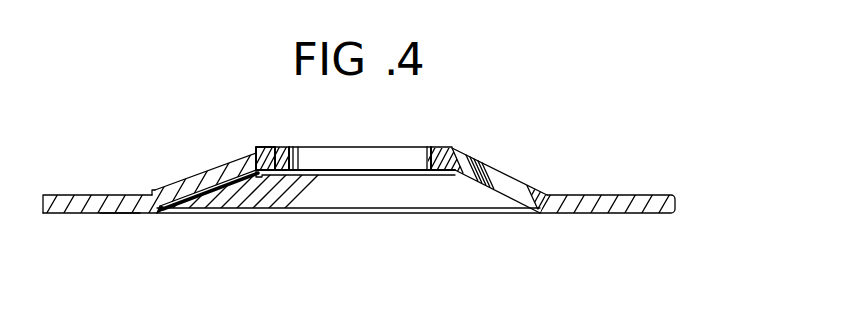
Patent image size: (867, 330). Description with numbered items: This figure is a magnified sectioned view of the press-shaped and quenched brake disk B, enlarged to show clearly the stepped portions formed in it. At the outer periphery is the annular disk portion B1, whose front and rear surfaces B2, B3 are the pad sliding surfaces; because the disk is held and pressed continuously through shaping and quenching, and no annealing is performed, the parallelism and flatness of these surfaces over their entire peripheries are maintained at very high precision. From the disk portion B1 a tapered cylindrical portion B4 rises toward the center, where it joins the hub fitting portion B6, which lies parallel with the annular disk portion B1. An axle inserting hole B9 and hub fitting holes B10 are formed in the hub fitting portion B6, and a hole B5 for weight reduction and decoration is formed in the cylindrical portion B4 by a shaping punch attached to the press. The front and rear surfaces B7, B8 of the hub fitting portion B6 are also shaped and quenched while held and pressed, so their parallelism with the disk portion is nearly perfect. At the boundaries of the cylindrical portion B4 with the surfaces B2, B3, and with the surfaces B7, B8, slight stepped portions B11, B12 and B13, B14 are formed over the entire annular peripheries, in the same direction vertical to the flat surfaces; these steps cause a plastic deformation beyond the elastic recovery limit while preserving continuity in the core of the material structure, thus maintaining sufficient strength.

The brake disk B is at (585, 195).
The annular disk portion B1 is at (70, 213).
The front surface B2 is at (92, 192).
The rear surface B3 is at (122, 213).
The tapered cylindrical portion B4 is at (203, 182).
The hole B5 is at (493, 177).
The hub fitting portion B6 is at (450, 173).
The front surface B7 is at (443, 147).
The rear surface B8 is at (453, 173).
The axle inserting hole B9 is at (412, 148).
The hub fitting hole B10 is at (275, 155).
The stepped portion B11 is at (148, 190).
The stepped portion B12 is at (163, 213).
The stepped portion B13 is at (257, 150).
The stepped portion B14 is at (260, 172).